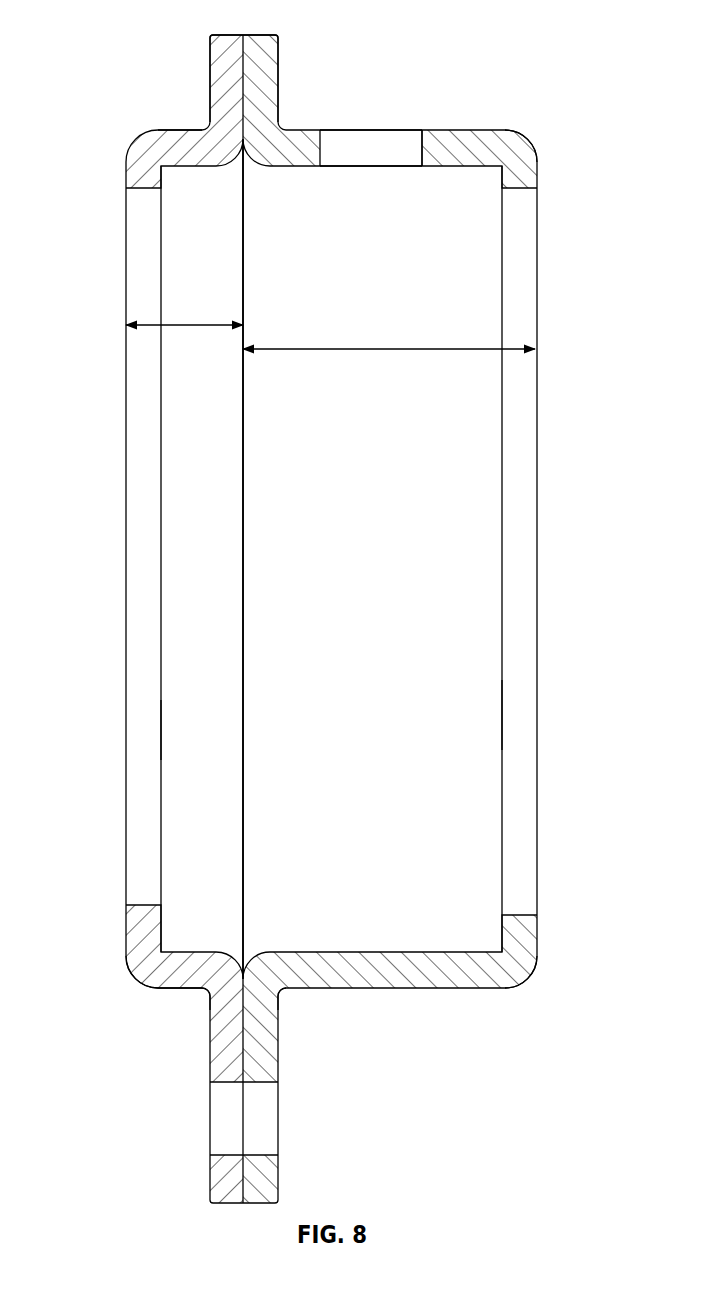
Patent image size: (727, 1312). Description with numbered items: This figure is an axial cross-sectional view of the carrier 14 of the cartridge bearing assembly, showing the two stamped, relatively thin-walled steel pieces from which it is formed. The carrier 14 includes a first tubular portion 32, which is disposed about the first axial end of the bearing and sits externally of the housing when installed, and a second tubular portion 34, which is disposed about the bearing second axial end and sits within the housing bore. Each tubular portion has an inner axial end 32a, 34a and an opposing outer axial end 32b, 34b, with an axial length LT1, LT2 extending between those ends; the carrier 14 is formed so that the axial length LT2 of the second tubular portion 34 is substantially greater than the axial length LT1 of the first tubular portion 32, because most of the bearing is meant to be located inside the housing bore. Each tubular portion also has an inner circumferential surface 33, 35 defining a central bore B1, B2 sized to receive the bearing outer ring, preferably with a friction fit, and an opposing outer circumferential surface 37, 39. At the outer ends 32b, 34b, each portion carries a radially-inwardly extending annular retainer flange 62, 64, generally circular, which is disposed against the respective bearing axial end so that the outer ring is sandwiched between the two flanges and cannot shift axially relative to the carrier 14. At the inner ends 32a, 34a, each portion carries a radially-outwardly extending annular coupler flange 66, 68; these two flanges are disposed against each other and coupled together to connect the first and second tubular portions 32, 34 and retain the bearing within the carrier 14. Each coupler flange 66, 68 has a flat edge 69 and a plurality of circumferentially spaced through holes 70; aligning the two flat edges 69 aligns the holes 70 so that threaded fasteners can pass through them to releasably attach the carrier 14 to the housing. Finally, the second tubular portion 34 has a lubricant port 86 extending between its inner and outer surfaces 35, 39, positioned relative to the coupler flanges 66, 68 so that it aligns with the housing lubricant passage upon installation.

The carrier 14 is at (100, 559).
The first tubular portion 32 is at (122, 927).
The inner axial end 32a is at (220, 999).
The outer axial end 32b is at (137, 967).
The inner circumferential surface 33 is at (214, 623).
The second tubular portion 34 is at (549, 941).
The inner axial end 34a is at (272, 993).
The outer axial end 34b is at (513, 970).
The inner circumferential surface 35 is at (384, 622).
The outer circumferential surface 37 is at (186, 130).
The outer circumferential surface 39 is at (447, 130).
The retainer flange 62 is at (124, 177).
The retainer flange 64 is at (524, 151).
The coupler flange 66 is at (213, 59).
The coupler flange 68 is at (276, 55).
The flat edge 69 is at (230, 35).
The through holes 70 is at (228, 1155).
The lubricant port 86 is at (378, 142).
The axial length LT1 is at (185, 324).
The axial length LT2 is at (390, 348).
The central bore B1 is at (188, 723).
The central bore B2 is at (450, 685).